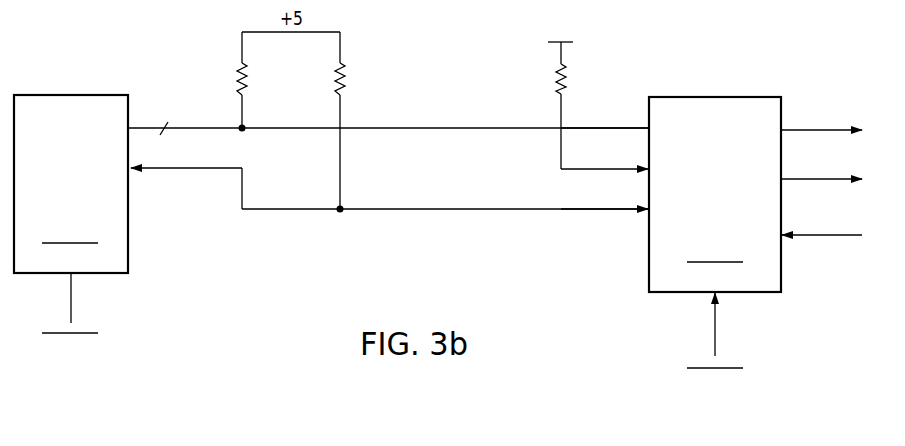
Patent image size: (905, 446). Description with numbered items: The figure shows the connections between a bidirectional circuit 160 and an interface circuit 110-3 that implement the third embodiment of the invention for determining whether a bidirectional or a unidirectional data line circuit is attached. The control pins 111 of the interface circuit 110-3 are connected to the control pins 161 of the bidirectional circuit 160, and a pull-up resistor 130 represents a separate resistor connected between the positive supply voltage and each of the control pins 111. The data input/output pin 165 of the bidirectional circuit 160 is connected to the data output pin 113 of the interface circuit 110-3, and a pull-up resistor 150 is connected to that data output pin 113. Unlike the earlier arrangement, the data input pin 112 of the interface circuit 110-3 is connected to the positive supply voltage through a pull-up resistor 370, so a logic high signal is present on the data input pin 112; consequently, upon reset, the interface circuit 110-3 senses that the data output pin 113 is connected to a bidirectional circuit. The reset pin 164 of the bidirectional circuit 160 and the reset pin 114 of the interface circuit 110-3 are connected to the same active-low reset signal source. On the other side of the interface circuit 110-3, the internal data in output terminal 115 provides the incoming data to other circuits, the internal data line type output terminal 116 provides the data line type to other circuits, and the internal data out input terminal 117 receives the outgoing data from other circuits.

The bidirectional circuit 160 is at (84, 95).
The reset pin 164 is at (72, 290).
The control pins 161 is at (202, 126).
The data input/output pin 165 is at (202, 167).
The pull-up resistor 130 is at (238, 73).
The pull-up resistor 150 is at (344, 73).
The pull-up resistor 370 is at (566, 77).
The control pins 111 is at (609, 127).
The data input pin 112 is at (609, 168).
The data output pin 113 is at (609, 208).
The interface circuit 110-3 is at (724, 97).
The reset pin 114 is at (716, 317).
The internal data in output terminal 115 is at (815, 128).
The internal data line type output terminal 116 is at (815, 177).
The internal data out input terminal 117 is at (815, 233).